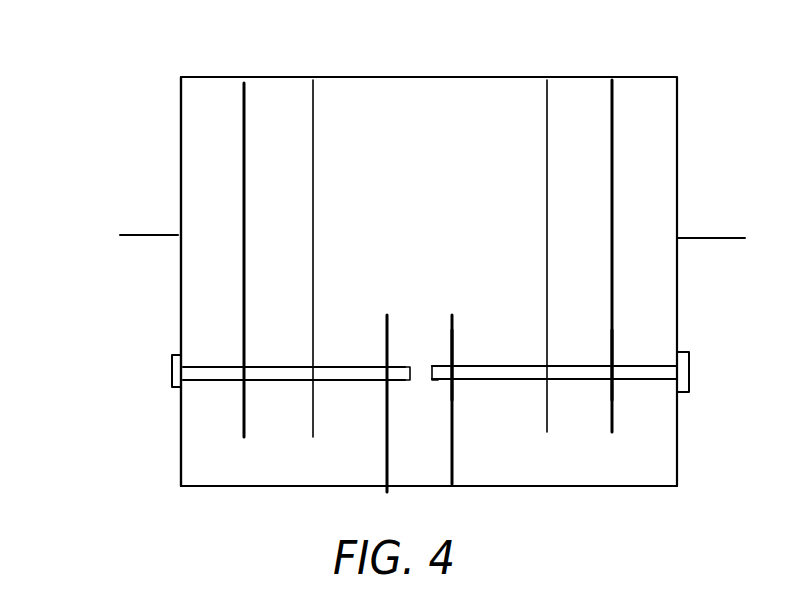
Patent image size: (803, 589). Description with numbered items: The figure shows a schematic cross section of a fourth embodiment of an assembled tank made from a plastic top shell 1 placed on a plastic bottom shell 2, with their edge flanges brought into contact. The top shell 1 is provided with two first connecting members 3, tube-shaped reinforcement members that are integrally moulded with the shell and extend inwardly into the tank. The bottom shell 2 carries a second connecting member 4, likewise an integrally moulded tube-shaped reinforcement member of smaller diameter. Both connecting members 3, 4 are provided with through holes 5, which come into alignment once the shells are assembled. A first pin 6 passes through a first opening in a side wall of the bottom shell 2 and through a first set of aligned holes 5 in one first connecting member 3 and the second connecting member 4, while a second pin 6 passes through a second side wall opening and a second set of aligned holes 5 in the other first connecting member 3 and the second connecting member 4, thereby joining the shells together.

The top shell 1 is at (148, 132).
The bottom shell 2 is at (180, 469).
The first connecting member 3 is at (317, 102).
The second connecting member 4 is at (468, 458).
The through holes 5 is at (520, 351).
The pin 6 is at (212, 366).